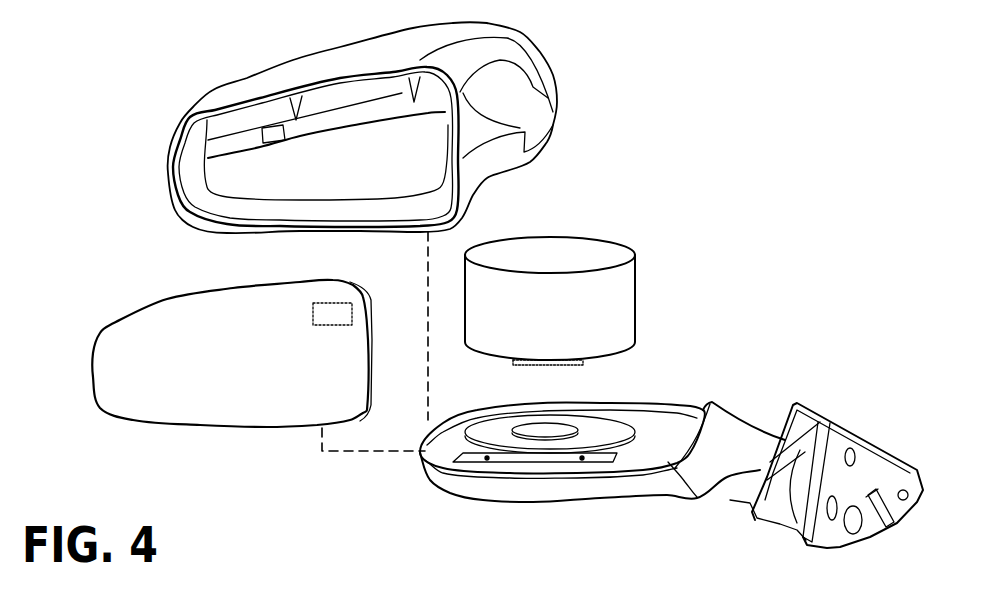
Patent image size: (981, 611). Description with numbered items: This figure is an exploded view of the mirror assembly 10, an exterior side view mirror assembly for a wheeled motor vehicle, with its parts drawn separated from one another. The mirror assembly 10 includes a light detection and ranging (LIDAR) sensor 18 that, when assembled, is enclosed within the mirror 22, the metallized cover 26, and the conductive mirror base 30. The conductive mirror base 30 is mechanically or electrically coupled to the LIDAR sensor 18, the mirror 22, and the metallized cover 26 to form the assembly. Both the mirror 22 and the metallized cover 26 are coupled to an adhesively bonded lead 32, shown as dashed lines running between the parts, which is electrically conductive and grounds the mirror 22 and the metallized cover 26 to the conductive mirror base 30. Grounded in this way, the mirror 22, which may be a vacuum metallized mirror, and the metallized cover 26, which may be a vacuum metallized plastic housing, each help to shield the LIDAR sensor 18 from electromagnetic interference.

The mirror assembly 10 is at (657, 133).
The metallized cover 26 is at (247, 86).
The mirror 22 is at (132, 348).
The adhesively bonded lead 32 is at (428, 250).
The LIDAR sensor 18 is at (600, 303).
The conductive mirror base 30 is at (740, 443).